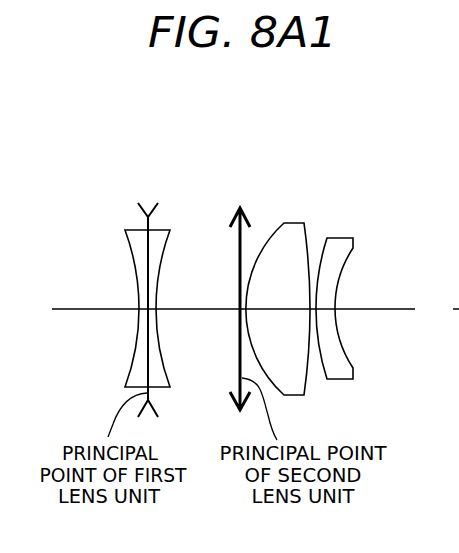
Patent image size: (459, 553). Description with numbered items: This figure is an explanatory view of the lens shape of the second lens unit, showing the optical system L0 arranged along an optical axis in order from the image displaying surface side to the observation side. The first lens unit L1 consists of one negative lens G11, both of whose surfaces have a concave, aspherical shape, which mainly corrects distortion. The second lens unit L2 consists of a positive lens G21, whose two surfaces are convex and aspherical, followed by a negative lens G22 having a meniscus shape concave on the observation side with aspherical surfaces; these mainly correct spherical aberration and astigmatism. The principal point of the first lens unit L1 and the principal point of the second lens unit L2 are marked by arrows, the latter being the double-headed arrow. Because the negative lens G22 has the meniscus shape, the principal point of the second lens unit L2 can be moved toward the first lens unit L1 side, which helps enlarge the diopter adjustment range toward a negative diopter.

The zoom lens (optical system) L0 is at (119, 138).
The first lens unit L1 is at (147, 257).
The second lens unit L2 is at (243, 168).
The negative lens G11 is at (147, 277).
The positive lens G21 is at (289, 233).
The negative lens G22 is at (335, 252).